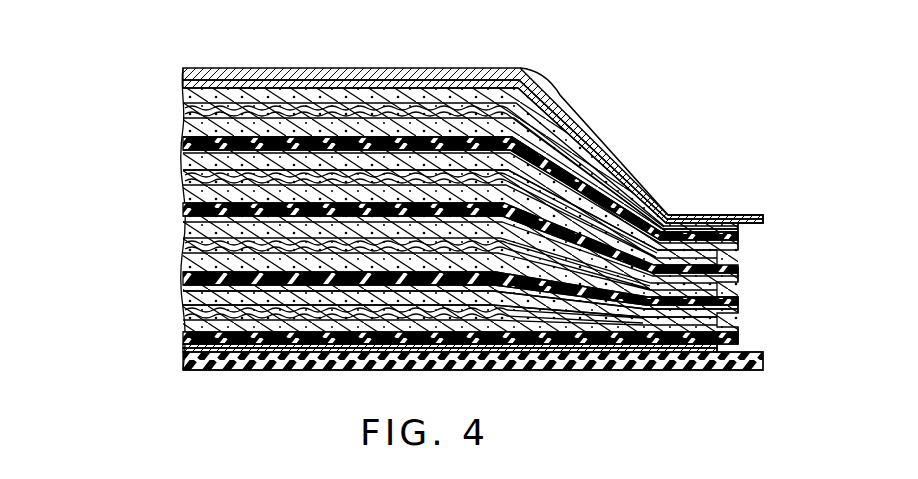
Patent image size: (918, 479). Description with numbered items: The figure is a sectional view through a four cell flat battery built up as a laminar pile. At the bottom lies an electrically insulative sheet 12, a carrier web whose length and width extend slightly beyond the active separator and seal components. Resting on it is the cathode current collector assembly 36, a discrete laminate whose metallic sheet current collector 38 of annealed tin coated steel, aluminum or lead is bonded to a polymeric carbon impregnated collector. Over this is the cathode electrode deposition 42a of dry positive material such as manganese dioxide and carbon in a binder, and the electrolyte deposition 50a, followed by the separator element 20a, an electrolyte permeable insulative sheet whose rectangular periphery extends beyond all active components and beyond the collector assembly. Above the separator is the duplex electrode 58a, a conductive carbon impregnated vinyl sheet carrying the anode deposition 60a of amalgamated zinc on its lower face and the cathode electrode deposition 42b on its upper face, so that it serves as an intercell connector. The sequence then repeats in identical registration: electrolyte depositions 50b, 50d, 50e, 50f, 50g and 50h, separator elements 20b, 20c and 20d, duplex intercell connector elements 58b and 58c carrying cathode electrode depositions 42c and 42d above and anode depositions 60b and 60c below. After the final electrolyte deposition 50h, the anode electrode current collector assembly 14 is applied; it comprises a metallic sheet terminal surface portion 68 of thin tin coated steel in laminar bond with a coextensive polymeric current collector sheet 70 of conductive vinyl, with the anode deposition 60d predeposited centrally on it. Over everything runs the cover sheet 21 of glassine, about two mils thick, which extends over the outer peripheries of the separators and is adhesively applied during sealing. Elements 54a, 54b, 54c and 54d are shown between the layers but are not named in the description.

The electrically insulative sheet 12 is at (690, 368).
The anode electrode current collector assembly 14 is at (757, 228).
The separator element 20a is at (740, 338).
The separator element 20b is at (740, 308).
The separator element 20c is at (740, 278).
The separator element 20d is at (740, 240).
The cover sheet 21 is at (300, 68).
The cathode current collector assembly 36 is at (597, 353).
The metallic sheet current collector 38 is at (523, 350).
The cathode electrode deposition 42a is at (193, 367).
The cathode electrode deposition 42b is at (183, 310).
The cathode electrode deposition 42c is at (183, 220).
The cathode electrode deposition 42d is at (190, 132).
The electrolyte deposition 50a is at (280, 370).
The electrolyte deposition 50b is at (183, 333).
The electrolyte deposition 50d is at (183, 247).
The electrolyte deposition 50e is at (183, 200).
The electrolyte deposition 50f is at (183, 162).
The electrolyte deposition 50g is at (187, 120).
The electrolyte deposition 50h is at (223, 95).
The thin layer 54a is at (233, 367).
The thin layer 54b is at (183, 277).
The thin layer 54c is at (183, 170).
The thin layer 54d is at (183, 102).
The duplex electrode 58a is at (183, 283).
The duplex intercell connector element 58b is at (183, 228).
The duplex intercell connector element 58c is at (187, 140).
The anode deposition 60a is at (183, 318).
The anode deposition 60b is at (183, 257).
The anode deposition 60c is at (187, 153).
The anode deposition 60d is at (358, 103).
The metallic sheet terminal surface portion 68 is at (410, 70).
The polymeric current collector sheet 70 is at (540, 85).